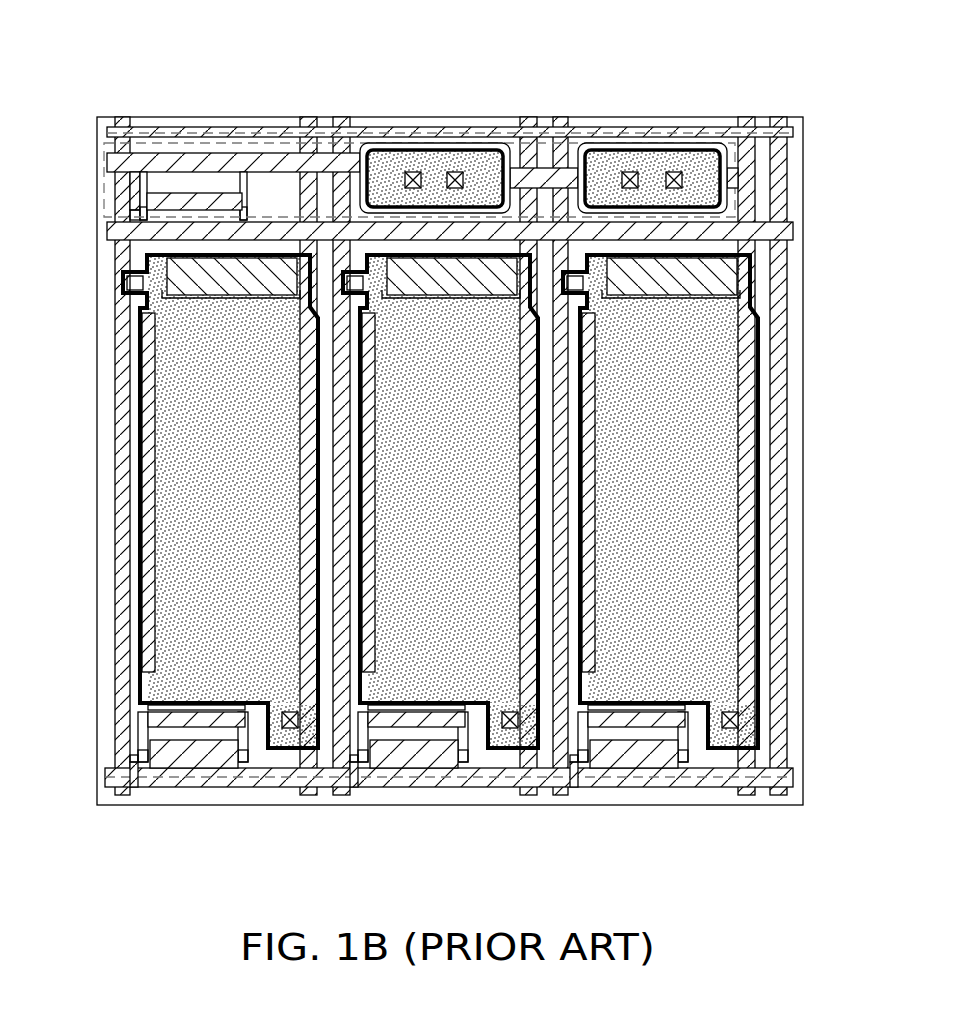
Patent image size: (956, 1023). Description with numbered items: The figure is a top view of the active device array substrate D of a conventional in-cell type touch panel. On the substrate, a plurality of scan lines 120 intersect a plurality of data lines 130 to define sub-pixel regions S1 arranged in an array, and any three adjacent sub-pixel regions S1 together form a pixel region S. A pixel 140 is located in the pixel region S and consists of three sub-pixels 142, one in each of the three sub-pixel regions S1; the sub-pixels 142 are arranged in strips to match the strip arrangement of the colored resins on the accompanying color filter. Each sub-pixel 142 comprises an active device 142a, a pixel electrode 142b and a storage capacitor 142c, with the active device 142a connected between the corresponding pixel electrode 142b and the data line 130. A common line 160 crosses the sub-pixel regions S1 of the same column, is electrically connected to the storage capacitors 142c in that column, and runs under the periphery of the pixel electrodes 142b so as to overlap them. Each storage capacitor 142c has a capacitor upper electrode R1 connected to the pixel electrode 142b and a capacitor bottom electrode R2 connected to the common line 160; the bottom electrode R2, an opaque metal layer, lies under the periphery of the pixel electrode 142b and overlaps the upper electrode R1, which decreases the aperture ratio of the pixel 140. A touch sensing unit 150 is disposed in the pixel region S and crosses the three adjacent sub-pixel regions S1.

The active device array substrate D is at (84, 92).
The pixel region S is at (797, 126).
The sub-pixel region S1 is at (118, 483).
The common line 160 is at (757, 520).
The touch sensing unit 150 is at (103, 190).
The pixel 140 is at (745, 82).
The sub-pixel 142 is at (258, 243).
The active device 142a is at (262, 749).
The pixel electrode 142b is at (183, 622).
The storage capacitor 142c is at (215, 300).
The data line 130 is at (198, 772).
The scan line 120 is at (125, 762).
The capacitor upper electrode R1 is at (165, 272).
The capacitor bottom electrode R2 is at (165, 283).